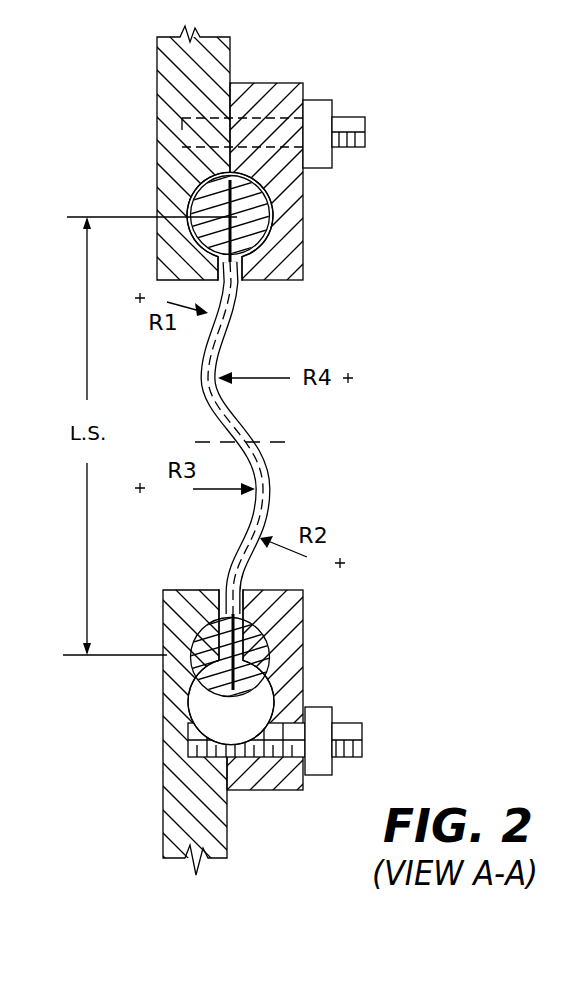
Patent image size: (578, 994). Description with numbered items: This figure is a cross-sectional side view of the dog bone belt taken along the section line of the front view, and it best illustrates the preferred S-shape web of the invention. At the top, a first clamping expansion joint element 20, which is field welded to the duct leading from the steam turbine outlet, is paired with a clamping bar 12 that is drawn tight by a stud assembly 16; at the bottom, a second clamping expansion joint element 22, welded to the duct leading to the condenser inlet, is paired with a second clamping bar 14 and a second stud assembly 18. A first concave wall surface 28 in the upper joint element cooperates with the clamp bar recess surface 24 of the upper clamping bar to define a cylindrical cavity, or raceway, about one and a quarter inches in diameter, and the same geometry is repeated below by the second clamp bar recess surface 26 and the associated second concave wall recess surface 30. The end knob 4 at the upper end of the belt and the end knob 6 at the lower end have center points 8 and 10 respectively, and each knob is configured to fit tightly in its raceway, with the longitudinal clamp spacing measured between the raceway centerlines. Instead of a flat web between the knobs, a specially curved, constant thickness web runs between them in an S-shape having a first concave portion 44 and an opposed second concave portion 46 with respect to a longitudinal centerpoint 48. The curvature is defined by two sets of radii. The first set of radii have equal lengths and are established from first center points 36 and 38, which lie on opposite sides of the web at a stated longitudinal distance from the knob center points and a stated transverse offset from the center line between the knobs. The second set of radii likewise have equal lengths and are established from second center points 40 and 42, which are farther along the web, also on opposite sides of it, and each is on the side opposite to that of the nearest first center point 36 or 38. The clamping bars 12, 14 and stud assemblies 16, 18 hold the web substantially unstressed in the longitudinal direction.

The end knob 4 is at (265, 232).
The end knob 6 is at (170, 591).
The center point 8 is at (240, 228).
The center point 10 is at (215, 648).
The clamping bar 12 is at (250, 83).
The clamping bar 14 is at (305, 596).
The stud assembly 16 is at (356, 117).
The stud assembly 18 is at (351, 723).
The first clamping expansion joint element 20 is at (157, 106).
The second clamping expansion joint element 22 is at (163, 745).
The clamp bar recess surface 24 is at (270, 182).
The second clamp bar recess surface 26 is at (273, 670).
The first concave wall surface 28 is at (190, 193).
The second concave wall recess surface 30 is at (207, 592).
The first center point 36 is at (137, 297).
The first center point 38 is at (344, 565).
The second center point 40 is at (142, 492).
The second center point 42 is at (350, 376).
The first concave portion 44 is at (199, 358).
The second concave portion 46 is at (273, 474).
The longitudinal centerpoint 48 is at (268, 440).